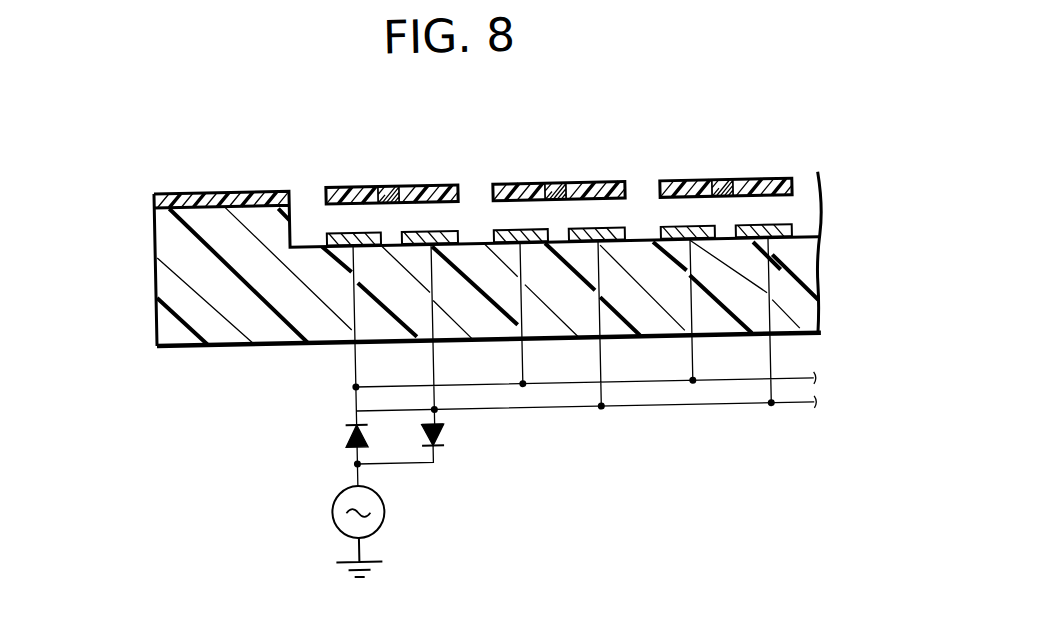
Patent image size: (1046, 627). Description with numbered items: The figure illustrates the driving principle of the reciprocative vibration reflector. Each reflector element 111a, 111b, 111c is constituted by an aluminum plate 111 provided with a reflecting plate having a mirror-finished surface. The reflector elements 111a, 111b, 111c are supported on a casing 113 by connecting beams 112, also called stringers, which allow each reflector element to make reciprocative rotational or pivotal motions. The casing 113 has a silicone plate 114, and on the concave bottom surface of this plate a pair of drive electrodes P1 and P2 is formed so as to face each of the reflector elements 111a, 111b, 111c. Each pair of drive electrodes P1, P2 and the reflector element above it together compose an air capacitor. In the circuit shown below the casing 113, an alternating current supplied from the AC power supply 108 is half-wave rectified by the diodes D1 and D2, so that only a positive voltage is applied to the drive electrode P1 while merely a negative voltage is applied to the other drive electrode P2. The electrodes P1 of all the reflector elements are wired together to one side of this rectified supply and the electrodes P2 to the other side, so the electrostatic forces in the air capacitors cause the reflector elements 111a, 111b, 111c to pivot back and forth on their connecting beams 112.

The AC power supply 108 is at (381, 512).
The aluminum plate 111 is at (556, 144).
The reflector element 111a is at (342, 190).
The reflector element 111b is at (509, 190).
The reflector element 111c is at (681, 191).
The connecting beam 112 is at (391, 190).
The casing 113 is at (142, 192).
The silicone plate 114 is at (836, 294).
The drive electrode P1 is at (349, 237).
The drive electrode P2 is at (424, 237).
The diode D1 is at (338, 438).
The diode D2 is at (457, 437).